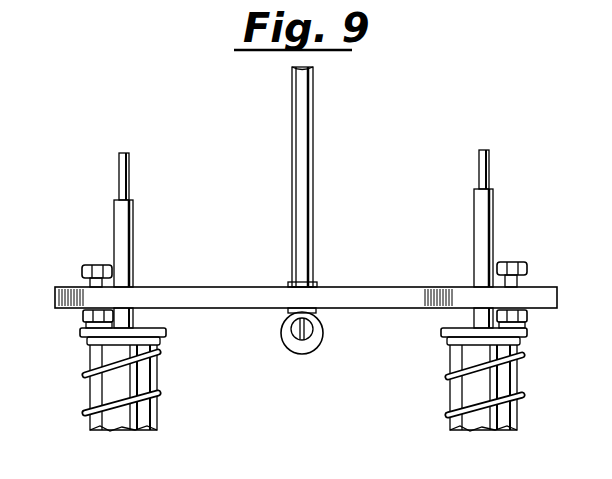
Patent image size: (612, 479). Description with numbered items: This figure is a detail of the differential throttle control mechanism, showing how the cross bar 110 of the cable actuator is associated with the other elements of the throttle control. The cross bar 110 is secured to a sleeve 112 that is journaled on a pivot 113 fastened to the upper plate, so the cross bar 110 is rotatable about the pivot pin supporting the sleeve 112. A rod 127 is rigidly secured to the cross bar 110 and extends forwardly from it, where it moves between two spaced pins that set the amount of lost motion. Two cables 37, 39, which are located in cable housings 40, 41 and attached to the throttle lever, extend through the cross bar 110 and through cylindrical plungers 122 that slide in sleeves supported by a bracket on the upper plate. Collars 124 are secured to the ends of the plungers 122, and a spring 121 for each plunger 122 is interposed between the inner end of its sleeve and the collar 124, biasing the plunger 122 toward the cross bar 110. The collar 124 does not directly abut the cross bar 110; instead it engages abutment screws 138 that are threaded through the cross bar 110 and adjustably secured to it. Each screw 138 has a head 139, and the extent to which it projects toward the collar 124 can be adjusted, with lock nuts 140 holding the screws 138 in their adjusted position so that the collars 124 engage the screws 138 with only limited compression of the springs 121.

The cross bar 110 is at (346, 286).
The rod 127 is at (320, 120).
The sleeve 112 is at (305, 350).
The pivot 113 is at (312, 328).
The cable 39 is at (131, 168).
The cable housing 41 is at (134, 222).
The cable 37 is at (482, 170).
The cable housing 40 is at (476, 220).
The head 139 is at (97, 265).
The lock nut 140 is at (82, 314).
The abutment screw 138 is at (84, 324).
The collar 124 is at (167, 334).
The plunger 122 is at (157, 412).
The spring 121 is at (160, 358).